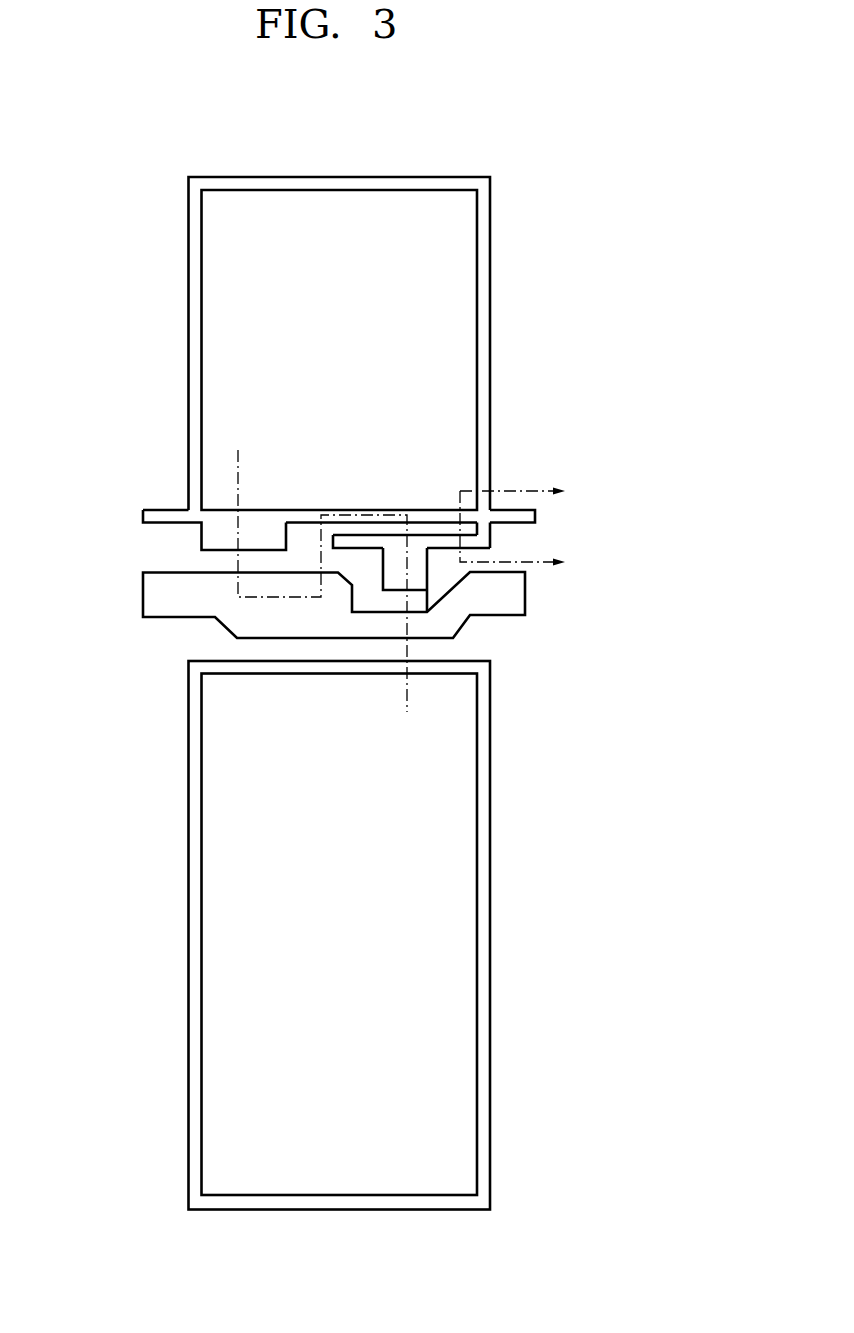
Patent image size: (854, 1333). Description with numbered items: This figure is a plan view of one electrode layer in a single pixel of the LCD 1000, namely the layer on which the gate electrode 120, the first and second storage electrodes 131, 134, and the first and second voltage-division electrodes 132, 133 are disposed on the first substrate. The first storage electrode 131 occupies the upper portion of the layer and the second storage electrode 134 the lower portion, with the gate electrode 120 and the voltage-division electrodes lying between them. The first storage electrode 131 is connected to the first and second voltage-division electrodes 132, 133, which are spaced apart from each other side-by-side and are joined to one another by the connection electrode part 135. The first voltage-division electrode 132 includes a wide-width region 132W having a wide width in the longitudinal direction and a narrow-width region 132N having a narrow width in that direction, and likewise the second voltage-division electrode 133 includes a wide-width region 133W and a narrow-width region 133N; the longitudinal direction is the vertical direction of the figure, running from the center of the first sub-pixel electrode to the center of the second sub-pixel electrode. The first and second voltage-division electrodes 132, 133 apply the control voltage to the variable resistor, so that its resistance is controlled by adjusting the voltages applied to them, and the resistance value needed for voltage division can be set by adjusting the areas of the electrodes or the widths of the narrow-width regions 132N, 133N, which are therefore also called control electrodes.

The LCD 1000 is at (562, 145).
The first storage electrode 131 is at (351, 186).
The first voltage-division electrode 132 is at (383, 393).
The wide-width region 132W is at (262, 530).
The narrow-width region 132N is at (312, 517).
The connection electrode part 135 is at (483, 534).
The second voltage-division electrode 133 is at (648, 612).
The narrow-width region 133N is at (442, 543).
The wide-width region 133W is at (415, 580).
The gate electrode 120 is at (168, 592).
The second storage electrode 134 is at (335, 1202).